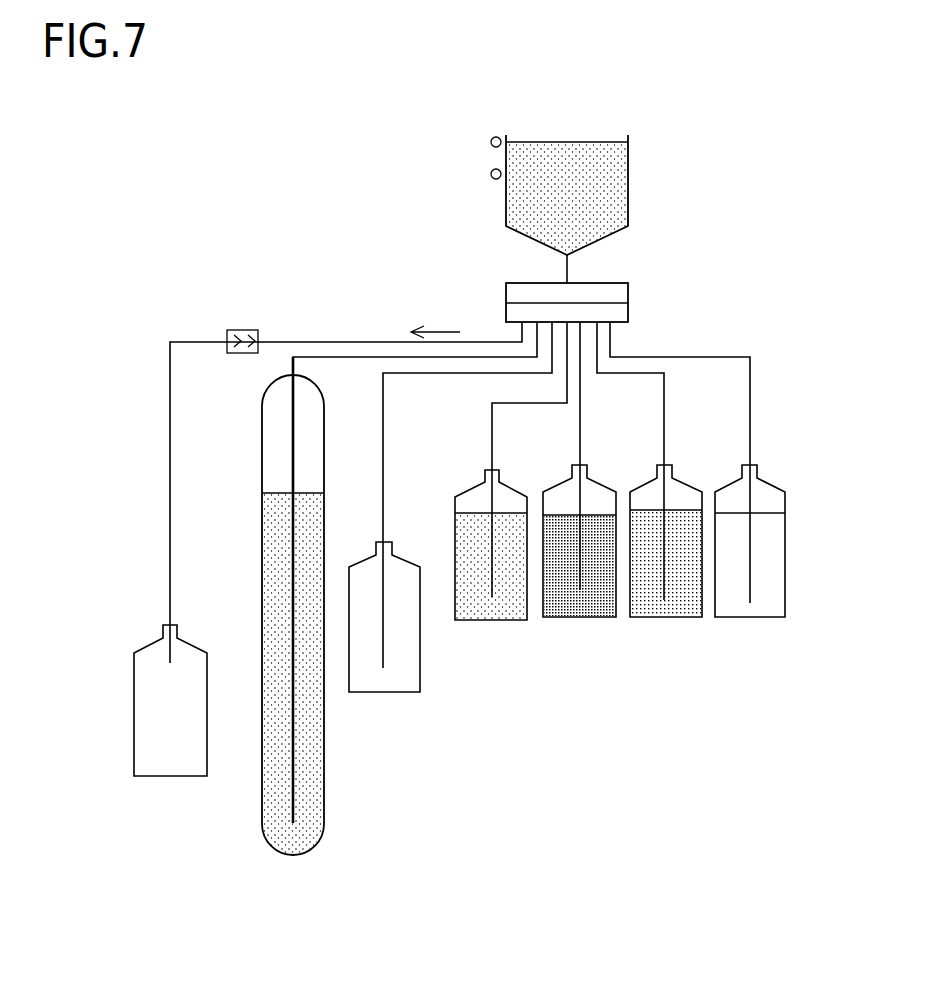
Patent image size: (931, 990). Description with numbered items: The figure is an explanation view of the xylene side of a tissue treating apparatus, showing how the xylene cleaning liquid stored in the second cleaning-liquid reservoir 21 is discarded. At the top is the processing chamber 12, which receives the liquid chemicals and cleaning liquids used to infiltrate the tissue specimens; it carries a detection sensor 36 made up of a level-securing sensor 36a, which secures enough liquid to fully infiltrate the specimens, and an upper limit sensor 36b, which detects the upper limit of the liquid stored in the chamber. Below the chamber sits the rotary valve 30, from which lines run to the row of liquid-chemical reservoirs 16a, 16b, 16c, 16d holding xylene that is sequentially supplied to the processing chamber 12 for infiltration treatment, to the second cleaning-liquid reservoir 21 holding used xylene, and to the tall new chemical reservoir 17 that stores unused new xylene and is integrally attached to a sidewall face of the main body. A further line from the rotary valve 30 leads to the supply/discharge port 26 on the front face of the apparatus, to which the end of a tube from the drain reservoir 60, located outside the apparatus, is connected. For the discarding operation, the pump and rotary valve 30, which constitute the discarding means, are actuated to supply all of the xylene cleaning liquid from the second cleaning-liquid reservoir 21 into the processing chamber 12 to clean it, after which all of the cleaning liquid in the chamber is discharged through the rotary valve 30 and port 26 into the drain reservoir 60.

The processing chamber 12 is at (628, 157).
The rotary valve 30 is at (628, 300).
The detection sensor 36 is at (437, 117).
The level-securing sensor 36a is at (469, 176).
The upper limit sensor 36b is at (469, 141).
The supply/discharge port 26 is at (250, 334).
The new chemical reservoir 17 is at (324, 823).
The second cleaning-liquid reservoir 21 is at (387, 692).
The drain reservoir 60 is at (133, 700).
The liquid-chemical reservoir 16a is at (491, 570).
The liquid-chemical reservoir 16b is at (579, 568).
The liquid-chemical reservoir 16c is at (666, 566).
The liquid-chemical reservoir 16d is at (750, 568).